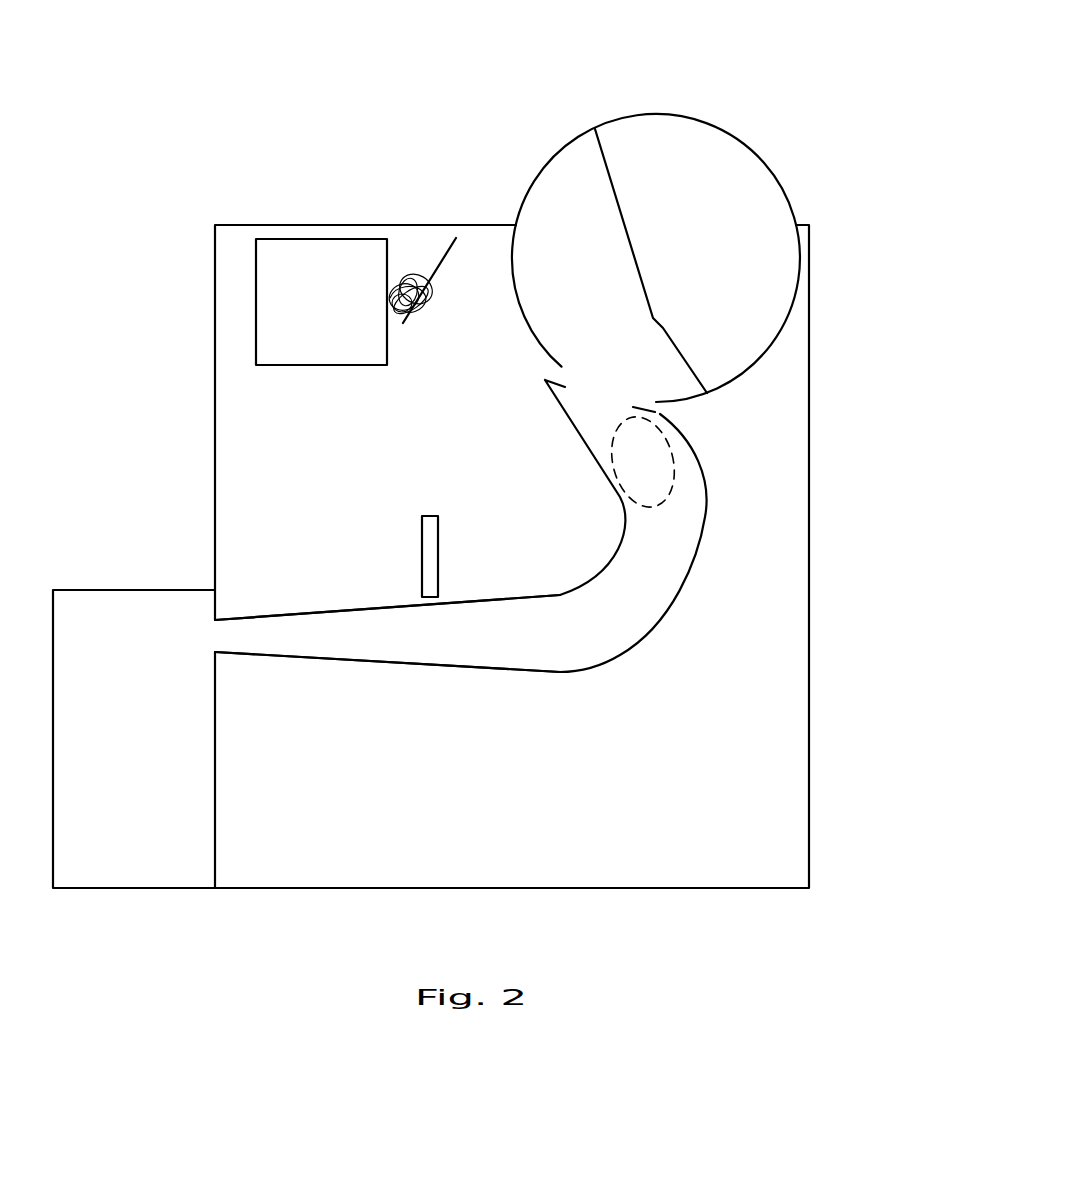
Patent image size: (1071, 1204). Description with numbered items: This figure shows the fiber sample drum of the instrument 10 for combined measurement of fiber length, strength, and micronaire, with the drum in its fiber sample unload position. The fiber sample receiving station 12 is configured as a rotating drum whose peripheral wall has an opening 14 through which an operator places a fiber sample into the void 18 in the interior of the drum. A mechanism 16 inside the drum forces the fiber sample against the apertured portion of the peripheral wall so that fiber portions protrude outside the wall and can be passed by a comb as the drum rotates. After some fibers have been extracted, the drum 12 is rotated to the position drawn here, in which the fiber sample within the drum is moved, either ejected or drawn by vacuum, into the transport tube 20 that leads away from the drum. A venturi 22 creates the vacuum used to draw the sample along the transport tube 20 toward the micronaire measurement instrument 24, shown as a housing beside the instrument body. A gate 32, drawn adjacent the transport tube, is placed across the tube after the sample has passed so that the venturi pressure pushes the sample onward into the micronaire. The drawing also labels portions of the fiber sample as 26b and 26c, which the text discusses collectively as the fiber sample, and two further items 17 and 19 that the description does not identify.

The instrument 10 is at (458, 479).
The fiber sample receiving station 12 is at (708, 112).
The opening 14 is at (599, 390).
The mechanism 16 is at (632, 243).
The wand 17 is at (435, 254).
The void 18 is at (588, 220).
The box 19 is at (321, 302).
The transport tube 20 is at (610, 645).
The venturi 22 is at (320, 645).
The micronaire measurement instrument 24 is at (127, 608).
The fiber clump 26b is at (420, 317).
The fiber clump 26c is at (643, 462).
The gate 32 is at (432, 573).